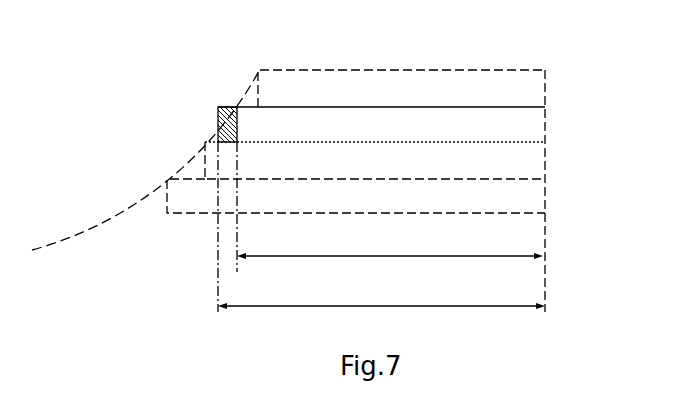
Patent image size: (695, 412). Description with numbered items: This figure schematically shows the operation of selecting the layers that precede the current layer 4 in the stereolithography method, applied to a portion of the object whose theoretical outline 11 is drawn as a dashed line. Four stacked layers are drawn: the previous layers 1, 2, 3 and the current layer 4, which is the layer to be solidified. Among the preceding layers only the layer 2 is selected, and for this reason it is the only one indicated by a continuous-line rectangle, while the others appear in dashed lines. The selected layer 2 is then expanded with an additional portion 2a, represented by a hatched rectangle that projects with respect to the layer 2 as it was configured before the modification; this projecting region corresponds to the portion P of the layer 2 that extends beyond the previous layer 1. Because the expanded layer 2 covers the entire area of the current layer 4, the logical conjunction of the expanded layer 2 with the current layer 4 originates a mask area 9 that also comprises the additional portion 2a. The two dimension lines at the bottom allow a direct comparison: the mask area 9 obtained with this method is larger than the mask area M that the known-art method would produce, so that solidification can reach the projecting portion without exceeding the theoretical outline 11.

The layer 1 is at (560, 88).
The layer 2 is at (560, 123).
The layer 3 is at (560, 159).
The current layer 4 is at (560, 195).
The additional portion 2a is at (219, 108).
The theoretical outline 11 is at (78, 233).
The portion P is at (246, 105).
The mask area M is at (410, 257).
The mask area 9 is at (463, 307).